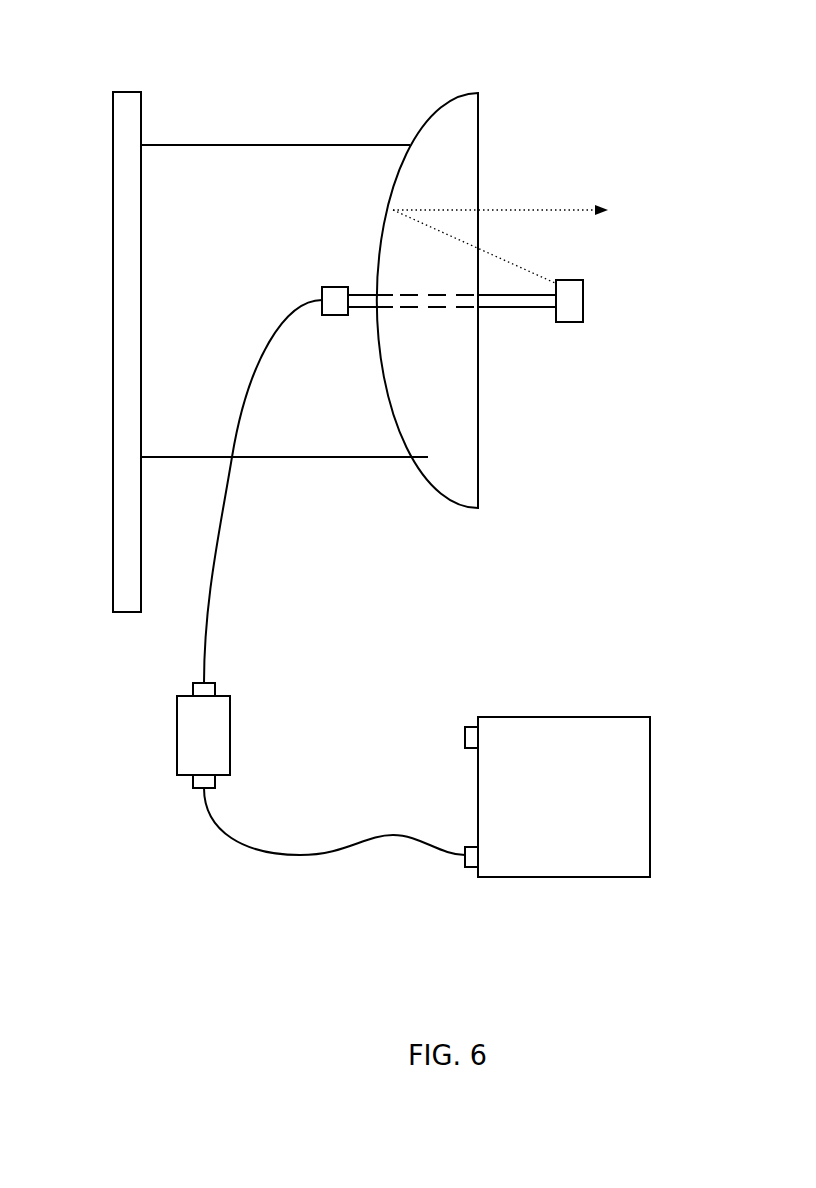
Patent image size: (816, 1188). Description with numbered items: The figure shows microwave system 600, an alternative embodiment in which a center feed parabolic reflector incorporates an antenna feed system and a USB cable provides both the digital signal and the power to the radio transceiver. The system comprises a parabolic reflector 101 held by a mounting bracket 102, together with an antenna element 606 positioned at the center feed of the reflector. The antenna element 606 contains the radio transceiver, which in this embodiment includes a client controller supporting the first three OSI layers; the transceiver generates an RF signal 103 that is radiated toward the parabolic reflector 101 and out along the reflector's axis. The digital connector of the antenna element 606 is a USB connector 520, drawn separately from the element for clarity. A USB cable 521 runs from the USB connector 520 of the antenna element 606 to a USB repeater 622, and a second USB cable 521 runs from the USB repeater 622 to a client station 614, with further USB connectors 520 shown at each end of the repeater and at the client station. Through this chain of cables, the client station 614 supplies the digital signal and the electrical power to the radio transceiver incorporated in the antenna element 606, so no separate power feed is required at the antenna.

The microwave system 600 is at (394, 478).
The mounting bracket 102 is at (123, 90).
The parabolic reflector 101 is at (457, 93).
The RF signal 103 is at (524, 241).
The antenna element 606 is at (522, 318).
The USB connector 520 is at (340, 286).
The USB cable 521 is at (216, 562).
The USB repeater 622 is at (174, 727).
The client station 614 is at (610, 713).